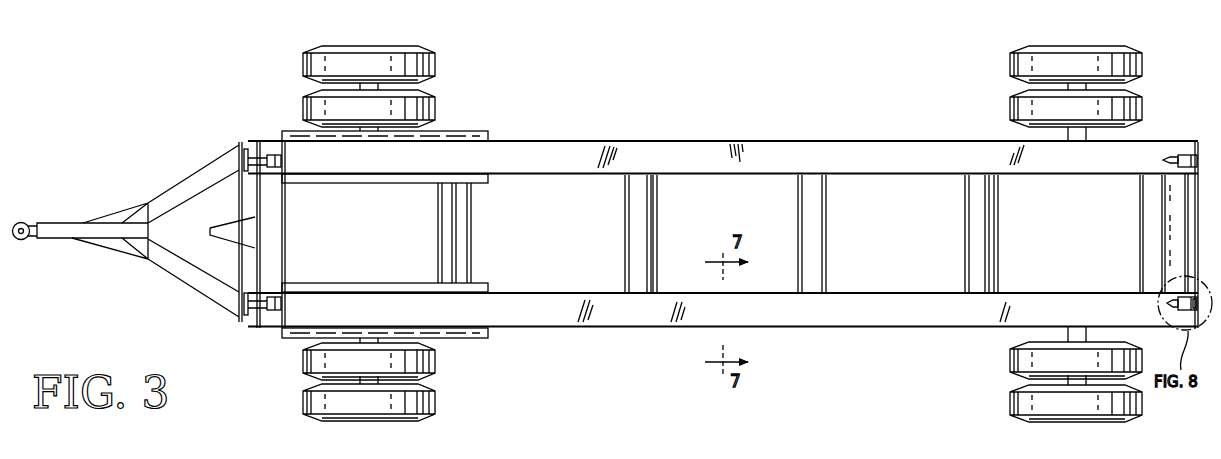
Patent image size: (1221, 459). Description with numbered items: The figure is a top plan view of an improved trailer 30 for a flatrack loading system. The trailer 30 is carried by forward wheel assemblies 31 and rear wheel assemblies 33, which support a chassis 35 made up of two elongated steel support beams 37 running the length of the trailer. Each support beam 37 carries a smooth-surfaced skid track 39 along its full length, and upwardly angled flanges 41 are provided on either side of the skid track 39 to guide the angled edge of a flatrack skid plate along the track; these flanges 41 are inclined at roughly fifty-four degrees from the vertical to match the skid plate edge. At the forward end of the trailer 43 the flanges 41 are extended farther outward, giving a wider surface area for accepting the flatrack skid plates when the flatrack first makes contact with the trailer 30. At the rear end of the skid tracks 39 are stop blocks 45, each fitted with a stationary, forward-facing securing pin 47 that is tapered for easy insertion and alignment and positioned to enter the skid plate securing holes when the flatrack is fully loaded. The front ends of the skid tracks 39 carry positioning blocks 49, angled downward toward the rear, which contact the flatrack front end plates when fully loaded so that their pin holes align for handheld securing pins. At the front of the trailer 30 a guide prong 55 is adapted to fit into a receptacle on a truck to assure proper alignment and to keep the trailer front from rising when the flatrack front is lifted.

The trailer 30 is at (582, 101).
The forward wheel assemblies 31 is at (443, 379).
The rear wheel assemblies 33 is at (1008, 380).
The chassis 35 is at (255, 323).
The support beams 37 is at (643, 140).
The skid track 39 is at (708, 158).
The flanges 41 is at (866, 173).
The forward end of the trailer 43 is at (485, 136).
The stop blocks 45 is at (1188, 298).
The securing pins 47 is at (1172, 157).
The positioning blocks 49 is at (260, 156).
The guide prong 55 is at (217, 223).